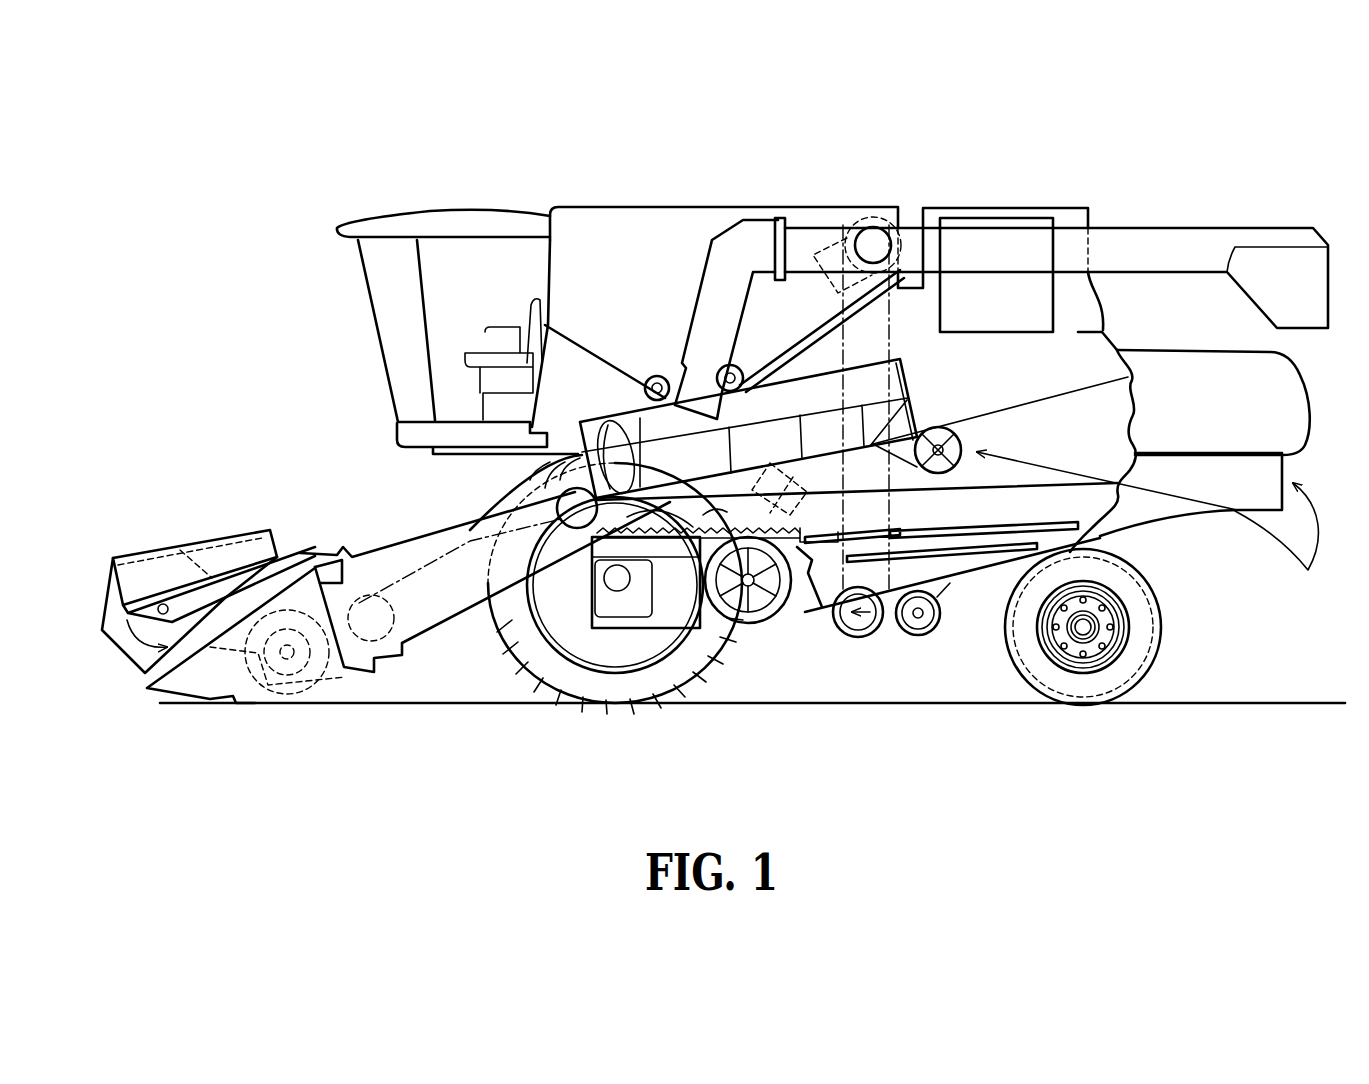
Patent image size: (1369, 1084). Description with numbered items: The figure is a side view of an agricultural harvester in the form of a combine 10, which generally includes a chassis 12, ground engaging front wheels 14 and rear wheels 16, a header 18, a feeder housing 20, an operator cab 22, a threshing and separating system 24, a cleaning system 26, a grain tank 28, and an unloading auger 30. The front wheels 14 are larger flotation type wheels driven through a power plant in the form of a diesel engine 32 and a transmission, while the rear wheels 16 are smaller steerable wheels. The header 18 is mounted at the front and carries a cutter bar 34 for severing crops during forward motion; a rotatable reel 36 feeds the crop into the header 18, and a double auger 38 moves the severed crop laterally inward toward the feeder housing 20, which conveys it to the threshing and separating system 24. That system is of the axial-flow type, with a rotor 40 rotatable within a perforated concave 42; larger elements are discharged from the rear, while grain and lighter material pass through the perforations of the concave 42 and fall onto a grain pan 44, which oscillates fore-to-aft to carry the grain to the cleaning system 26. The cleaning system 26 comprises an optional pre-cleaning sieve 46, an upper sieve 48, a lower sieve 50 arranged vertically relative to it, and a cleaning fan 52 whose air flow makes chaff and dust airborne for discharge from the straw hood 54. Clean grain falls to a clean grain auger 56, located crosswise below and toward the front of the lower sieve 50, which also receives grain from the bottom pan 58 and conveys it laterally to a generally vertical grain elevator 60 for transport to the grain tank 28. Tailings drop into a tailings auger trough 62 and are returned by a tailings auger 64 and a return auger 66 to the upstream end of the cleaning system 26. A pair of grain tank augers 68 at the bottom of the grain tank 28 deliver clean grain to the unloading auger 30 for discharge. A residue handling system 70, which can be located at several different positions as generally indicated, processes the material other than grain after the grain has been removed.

The combine 10 is at (413, 180).
The chassis 12 is at (1100, 540).
The front wheels 14 is at (585, 588).
The rear wheels 16 is at (1160, 658).
The header 18 is at (200, 520).
The feeder housing 20 is at (402, 538).
The operator cab 22 is at (377, 308).
The threshing and separating system 24 is at (522, 470).
The cleaning system 26 is at (812, 635).
The grain tank 28 is at (588, 212).
The unloading auger 30 is at (1177, 238).
The diesel engine 32 is at (980, 220).
The cutter bar 34 is at (213, 707).
The rotatable reel 36 is at (108, 597).
The double auger 38 is at (290, 673).
The rotor 40 is at (598, 423).
The perforated concave 42 is at (787, 402).
The grain pan 44 is at (593, 545).
The pre-cleaning sieve 46 is at (900, 527).
The upper sieve 48 is at (1000, 522).
The lower sieve 50 is at (880, 638).
The cleaning fan 52 is at (755, 613).
The straw hood 54 is at (1292, 397).
The clean grain auger 56 is at (863, 623).
The bottom pan 58 is at (1040, 567).
The grain elevator 60 is at (893, 332).
The tailings auger trough 62 is at (997, 573).
The tailings auger 64 is at (917, 627).
The return auger 66 is at (840, 520).
The grain tank augers 68 is at (652, 378).
The residue handling system 70 is at (1160, 546).